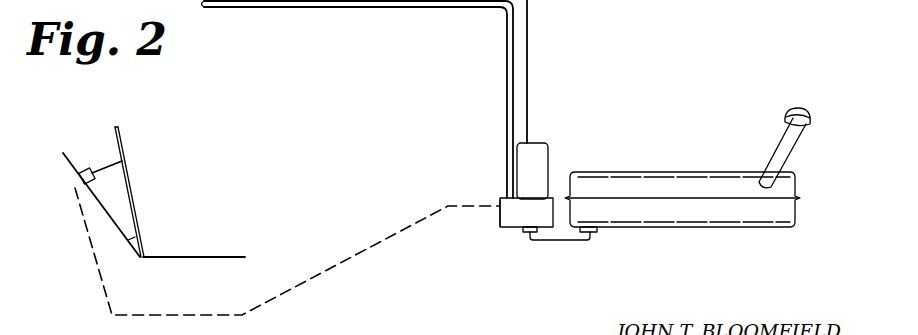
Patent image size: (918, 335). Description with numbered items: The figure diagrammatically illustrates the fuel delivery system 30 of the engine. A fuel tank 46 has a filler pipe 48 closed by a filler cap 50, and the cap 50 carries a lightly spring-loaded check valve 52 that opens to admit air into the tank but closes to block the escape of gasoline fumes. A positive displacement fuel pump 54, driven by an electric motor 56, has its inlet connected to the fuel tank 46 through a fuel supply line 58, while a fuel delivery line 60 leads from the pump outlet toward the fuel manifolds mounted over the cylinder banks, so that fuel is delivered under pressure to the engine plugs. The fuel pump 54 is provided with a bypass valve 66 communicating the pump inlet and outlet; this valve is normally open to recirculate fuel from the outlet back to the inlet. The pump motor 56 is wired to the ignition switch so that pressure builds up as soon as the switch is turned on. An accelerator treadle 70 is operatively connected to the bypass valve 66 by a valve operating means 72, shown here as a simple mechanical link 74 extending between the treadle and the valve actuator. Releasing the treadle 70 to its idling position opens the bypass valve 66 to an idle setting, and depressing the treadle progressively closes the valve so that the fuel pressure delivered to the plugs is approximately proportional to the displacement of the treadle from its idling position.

The fuel delivery system 30 is at (514, 65).
The fuel tank 46 is at (687, 182).
The filler pipe 48 is at (795, 151).
The filler cap 50 is at (812, 116).
The check valve 52 is at (783, 115).
The fuel pump 54 is at (522, 213).
The electric motor 56 is at (537, 160).
The fuel supply line 58 is at (563, 240).
The fuel delivery line 60 is at (353, 8).
The bypass valve 66 is at (501, 212).
The accelerator treadle 70 is at (123, 155).
The valve operating means 72 is at (293, 286).
The mechanical link 74 is at (385, 240).